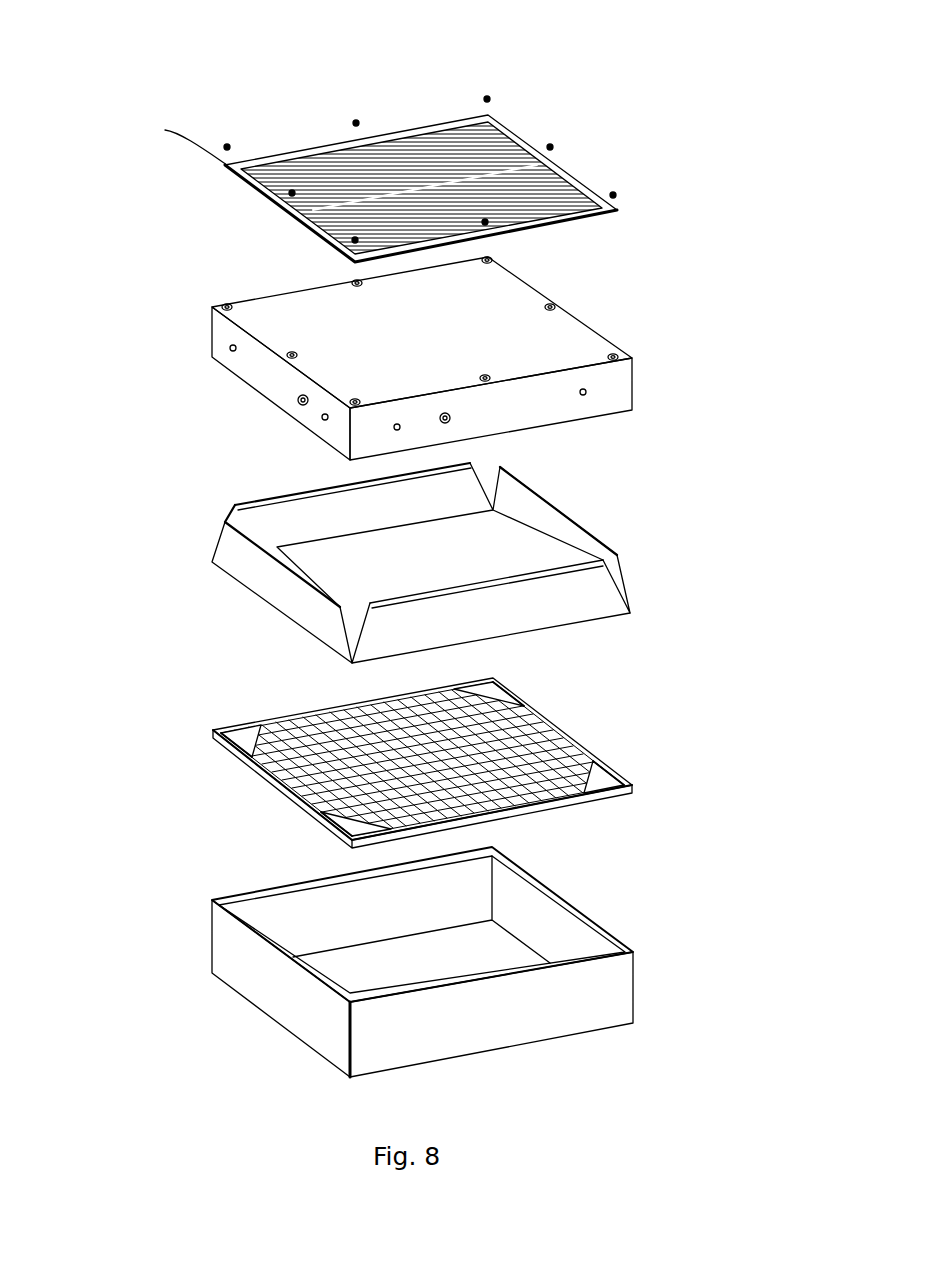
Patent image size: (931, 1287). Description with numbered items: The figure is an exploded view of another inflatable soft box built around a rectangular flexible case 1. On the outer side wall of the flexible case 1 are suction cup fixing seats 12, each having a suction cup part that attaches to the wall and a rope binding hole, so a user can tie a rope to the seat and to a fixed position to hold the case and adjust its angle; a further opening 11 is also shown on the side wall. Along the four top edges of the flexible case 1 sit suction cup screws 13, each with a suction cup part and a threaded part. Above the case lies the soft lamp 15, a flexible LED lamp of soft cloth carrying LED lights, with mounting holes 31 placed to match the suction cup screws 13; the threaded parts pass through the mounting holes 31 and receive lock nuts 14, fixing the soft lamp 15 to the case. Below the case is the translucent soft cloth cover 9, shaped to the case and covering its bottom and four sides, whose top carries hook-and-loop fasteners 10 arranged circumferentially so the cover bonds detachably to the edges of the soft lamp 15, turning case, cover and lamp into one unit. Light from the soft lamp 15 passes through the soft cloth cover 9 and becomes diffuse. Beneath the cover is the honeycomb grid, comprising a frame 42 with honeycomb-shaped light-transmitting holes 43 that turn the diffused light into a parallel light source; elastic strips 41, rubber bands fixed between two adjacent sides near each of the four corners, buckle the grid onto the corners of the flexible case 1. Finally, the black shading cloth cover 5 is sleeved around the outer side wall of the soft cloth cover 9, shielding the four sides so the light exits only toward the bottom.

The flexible case 1 is at (592, 345).
The shading cloth cover 5 is at (622, 995).
The soft cloth cover 9 is at (623, 573).
The hook-and-loop fasteners 10 is at (520, 577).
The connector hole 11 is at (303, 401).
The suction cup fixing seat 12 is at (230, 347).
The suction cup screw 13 is at (553, 303).
The lock nut 14 is at (487, 98).
The soft lamp 15 is at (342, 167).
The mounting hole 31 is at (545, 163).
The elastic strip 41 is at (215, 738).
The frame 42 is at (292, 792).
The honeycomb-shaped light-transmitting hole 43 is at (525, 698).